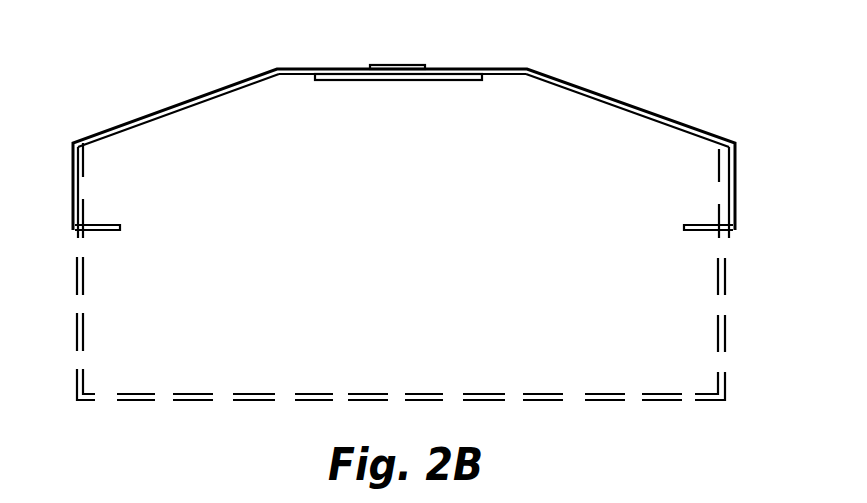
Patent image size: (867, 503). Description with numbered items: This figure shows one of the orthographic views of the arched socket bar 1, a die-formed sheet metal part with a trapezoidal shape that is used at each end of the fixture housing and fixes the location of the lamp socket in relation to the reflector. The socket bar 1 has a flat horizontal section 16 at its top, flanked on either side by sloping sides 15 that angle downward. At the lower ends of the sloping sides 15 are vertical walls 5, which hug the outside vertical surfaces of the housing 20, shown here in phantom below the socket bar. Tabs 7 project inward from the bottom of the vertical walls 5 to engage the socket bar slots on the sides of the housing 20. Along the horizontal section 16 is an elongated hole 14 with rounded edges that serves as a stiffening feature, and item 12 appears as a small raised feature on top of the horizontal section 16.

The arched socket bar 1 is at (138, 70).
The vertical walls 5 is at (72, 197).
The tabs 7 is at (113, 225).
The item 12 is at (417, 65).
The elongated hole 14 is at (370, 81).
The sloping sides 15 is at (200, 92).
The horizontal section 16 is at (508, 67).
The housing 20 is at (727, 328).